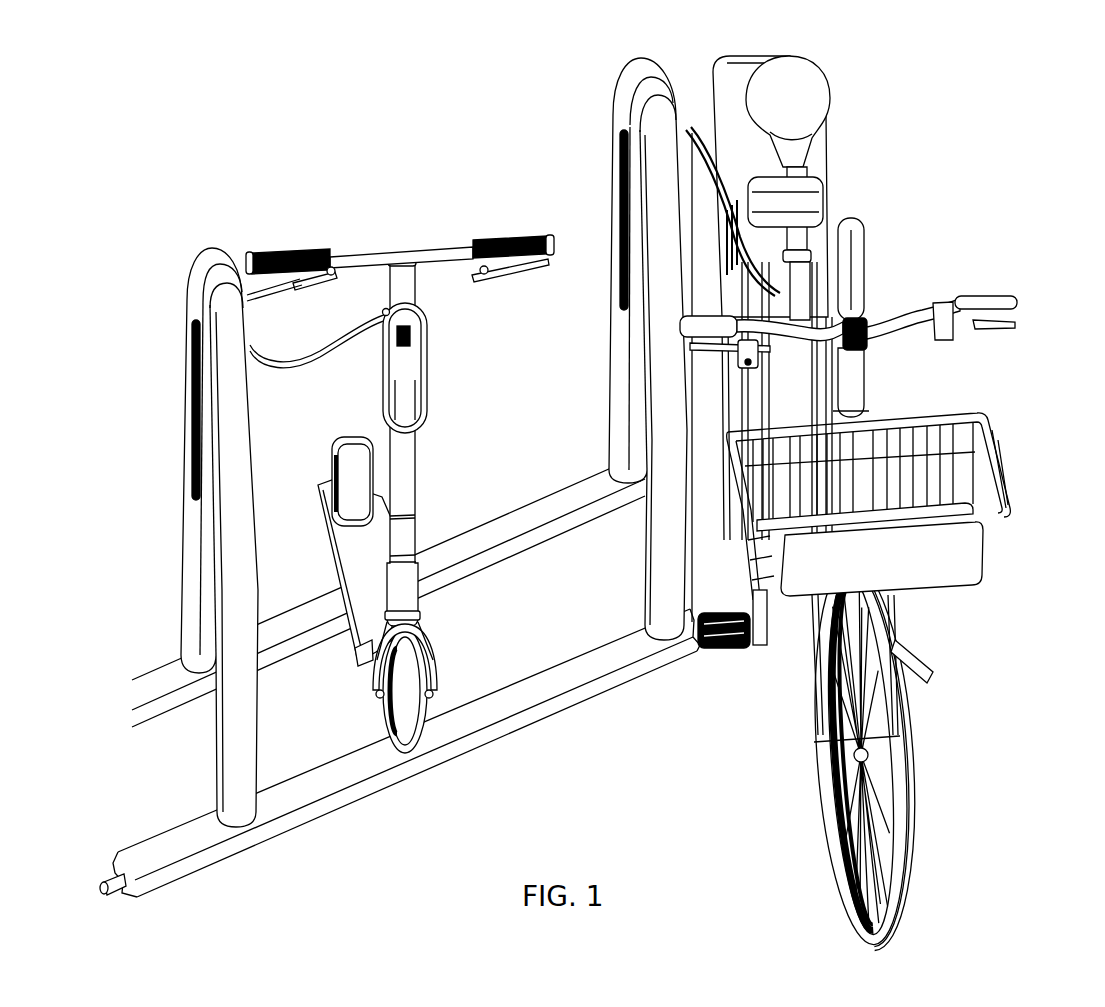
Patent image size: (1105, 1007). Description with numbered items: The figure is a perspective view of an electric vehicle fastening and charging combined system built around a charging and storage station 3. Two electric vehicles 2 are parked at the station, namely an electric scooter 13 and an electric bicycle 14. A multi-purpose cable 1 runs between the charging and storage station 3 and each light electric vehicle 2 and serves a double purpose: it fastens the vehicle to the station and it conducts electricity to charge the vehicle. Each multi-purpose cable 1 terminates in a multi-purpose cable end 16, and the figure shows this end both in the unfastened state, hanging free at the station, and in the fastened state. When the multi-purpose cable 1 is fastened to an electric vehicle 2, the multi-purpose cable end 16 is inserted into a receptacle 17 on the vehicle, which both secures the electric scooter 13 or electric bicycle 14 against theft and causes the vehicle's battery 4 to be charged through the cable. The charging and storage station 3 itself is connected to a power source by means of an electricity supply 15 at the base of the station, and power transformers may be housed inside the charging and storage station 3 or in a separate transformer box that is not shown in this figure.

The multi-purpose cable 1 is at (190, 424).
The electric vehicle 2 is at (553, 222).
The charging and storage station 3 is at (175, 218).
The battery 4 is at (412, 384).
The electric scooter 13 is at (550, 170).
The electric bicycle 14 is at (1060, 279).
The electricity supply 15 is at (124, 889).
The multi-purpose cable end 16 is at (197, 500).
The receptacle 17 is at (388, 313).